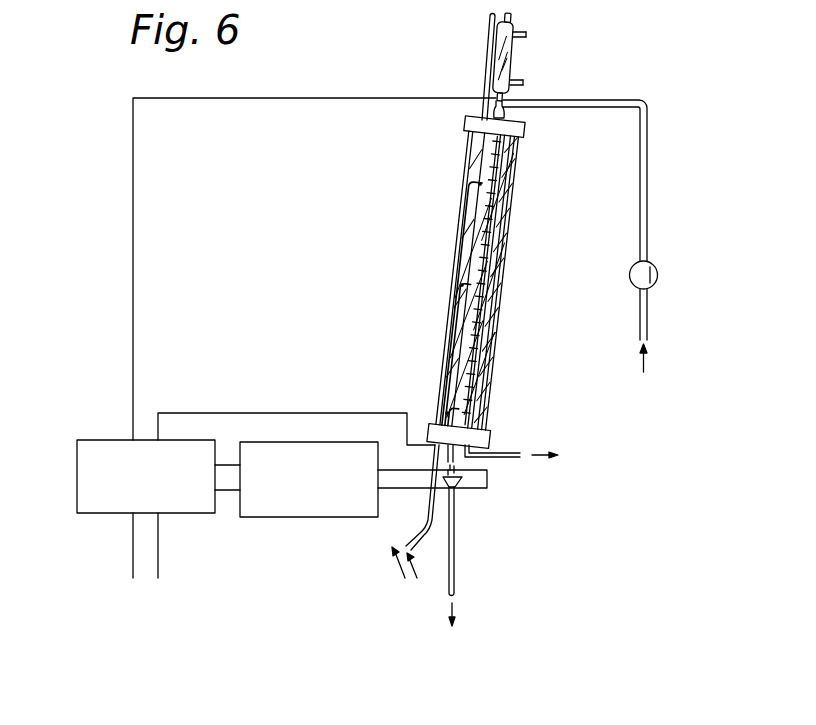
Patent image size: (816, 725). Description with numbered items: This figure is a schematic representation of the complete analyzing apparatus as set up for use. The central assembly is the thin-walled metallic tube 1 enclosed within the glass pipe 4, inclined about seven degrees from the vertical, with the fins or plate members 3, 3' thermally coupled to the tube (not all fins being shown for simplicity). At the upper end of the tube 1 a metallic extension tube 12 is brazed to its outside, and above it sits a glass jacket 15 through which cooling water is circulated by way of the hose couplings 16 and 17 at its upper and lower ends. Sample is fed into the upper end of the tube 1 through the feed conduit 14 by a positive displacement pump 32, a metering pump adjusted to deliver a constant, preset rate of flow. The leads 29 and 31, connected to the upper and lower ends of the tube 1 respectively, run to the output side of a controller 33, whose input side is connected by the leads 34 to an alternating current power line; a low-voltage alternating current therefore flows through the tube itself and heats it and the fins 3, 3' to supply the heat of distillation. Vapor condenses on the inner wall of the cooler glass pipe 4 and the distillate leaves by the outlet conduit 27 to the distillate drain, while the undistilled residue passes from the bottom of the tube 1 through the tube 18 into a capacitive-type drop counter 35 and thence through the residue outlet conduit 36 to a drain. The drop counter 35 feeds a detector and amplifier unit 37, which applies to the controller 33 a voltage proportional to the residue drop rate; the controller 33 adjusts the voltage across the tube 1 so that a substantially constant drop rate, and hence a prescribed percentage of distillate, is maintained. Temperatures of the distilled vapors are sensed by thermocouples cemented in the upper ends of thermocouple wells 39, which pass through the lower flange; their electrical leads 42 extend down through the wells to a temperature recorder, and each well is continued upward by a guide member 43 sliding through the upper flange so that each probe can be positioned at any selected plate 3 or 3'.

The tube 1 is at (510, 284).
The fins 3 is at (506, 283).
The plate members 3' is at (504, 283).
The glass pipe 4 is at (504, 283).
The extension tube 12 is at (505, 118).
The feed conduit 14 is at (648, 219).
The glass jacket 15 is at (503, 50).
The hose coupling 16 is at (527, 35).
The hose coupling 17 is at (524, 83).
The tube 18 is at (457, 460).
The outlet conduit 27 is at (508, 453).
The lead 29 is at (358, 97).
The lead 31 is at (285, 413).
The positive displacement pump 32 is at (658, 275).
The controller 33 is at (77, 475).
The leads 34 is at (158, 537).
The drop counter 35 is at (466, 481).
The residue outlet conduit 36 is at (455, 556).
The detector and amplifier unit 37 is at (283, 518).
The thermocouple well 39 is at (430, 510).
The electrical leads 42 is at (408, 573).
The guide member 43 is at (485, 72).